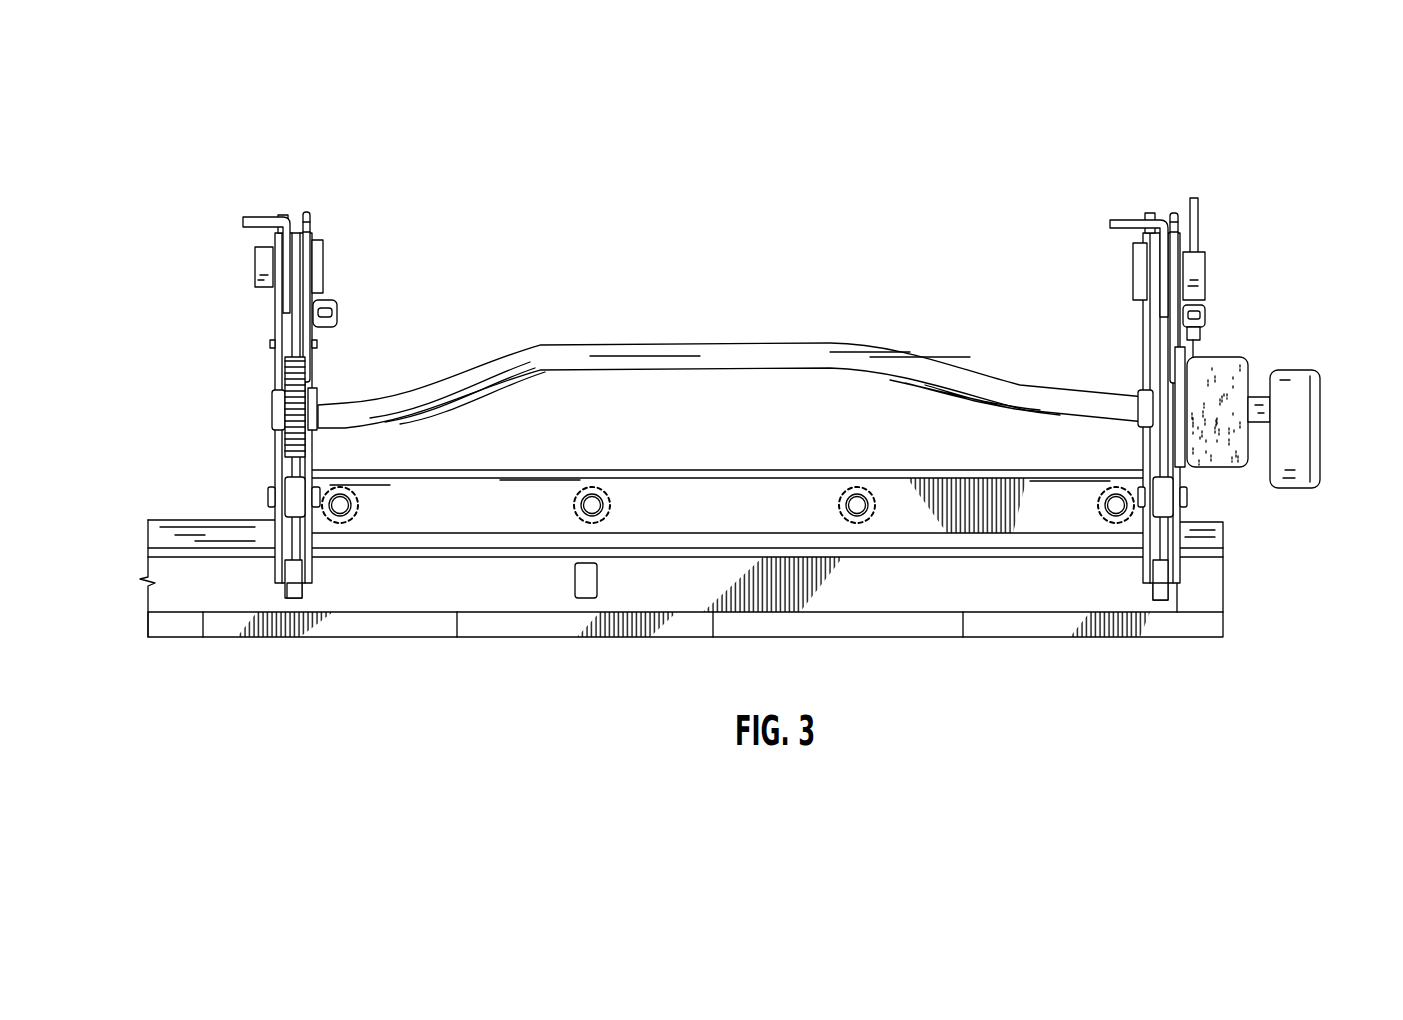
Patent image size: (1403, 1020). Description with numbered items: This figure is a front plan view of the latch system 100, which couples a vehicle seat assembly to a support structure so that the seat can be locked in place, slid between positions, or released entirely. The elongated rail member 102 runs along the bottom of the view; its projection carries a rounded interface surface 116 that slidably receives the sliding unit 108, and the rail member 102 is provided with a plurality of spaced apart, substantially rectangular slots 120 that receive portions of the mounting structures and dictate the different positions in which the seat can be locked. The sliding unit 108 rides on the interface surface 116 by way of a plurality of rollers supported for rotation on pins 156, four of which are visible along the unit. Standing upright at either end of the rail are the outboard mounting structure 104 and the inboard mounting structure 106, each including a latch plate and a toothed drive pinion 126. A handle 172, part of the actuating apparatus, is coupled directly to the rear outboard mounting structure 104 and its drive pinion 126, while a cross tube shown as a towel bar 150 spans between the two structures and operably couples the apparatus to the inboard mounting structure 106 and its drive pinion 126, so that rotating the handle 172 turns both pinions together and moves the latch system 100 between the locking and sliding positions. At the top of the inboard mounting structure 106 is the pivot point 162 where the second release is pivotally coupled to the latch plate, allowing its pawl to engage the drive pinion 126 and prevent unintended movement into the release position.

The latch system 100 is at (694, 178).
The rail member 102 is at (1255, 588).
The outboard mounting structure 104 is at (1167, 200).
The inboard mounting structure 106 is at (298, 208).
The sliding unit 108 is at (512, 468).
The interface surface 116 is at (233, 520).
The slots 120 is at (293, 598).
The drive pinion 126 is at (292, 385).
The towel bar 150 is at (626, 355).
The pins 156 is at (341, 505).
The pivot point 162 is at (258, 216).
The handle 172 is at (1298, 403).